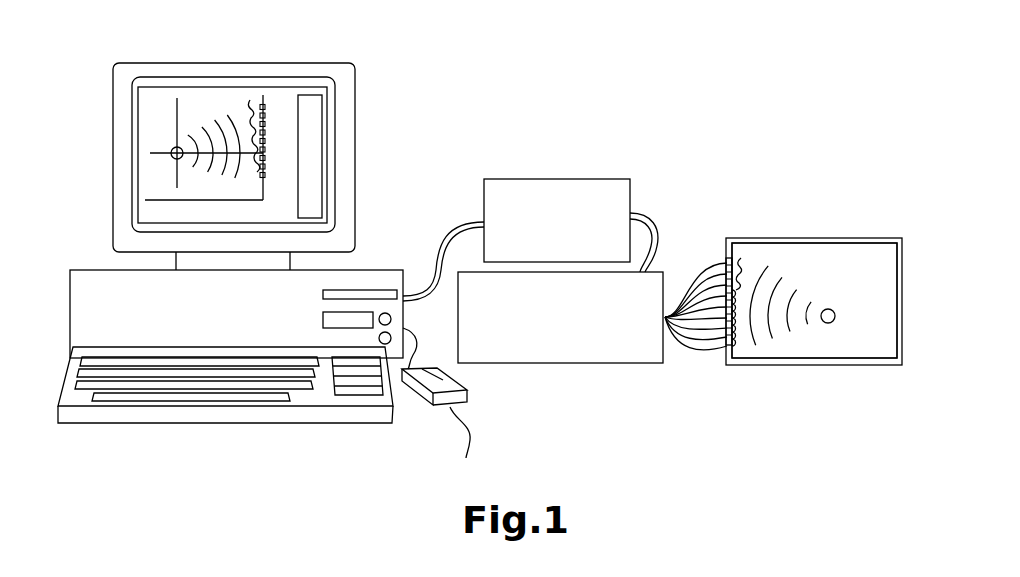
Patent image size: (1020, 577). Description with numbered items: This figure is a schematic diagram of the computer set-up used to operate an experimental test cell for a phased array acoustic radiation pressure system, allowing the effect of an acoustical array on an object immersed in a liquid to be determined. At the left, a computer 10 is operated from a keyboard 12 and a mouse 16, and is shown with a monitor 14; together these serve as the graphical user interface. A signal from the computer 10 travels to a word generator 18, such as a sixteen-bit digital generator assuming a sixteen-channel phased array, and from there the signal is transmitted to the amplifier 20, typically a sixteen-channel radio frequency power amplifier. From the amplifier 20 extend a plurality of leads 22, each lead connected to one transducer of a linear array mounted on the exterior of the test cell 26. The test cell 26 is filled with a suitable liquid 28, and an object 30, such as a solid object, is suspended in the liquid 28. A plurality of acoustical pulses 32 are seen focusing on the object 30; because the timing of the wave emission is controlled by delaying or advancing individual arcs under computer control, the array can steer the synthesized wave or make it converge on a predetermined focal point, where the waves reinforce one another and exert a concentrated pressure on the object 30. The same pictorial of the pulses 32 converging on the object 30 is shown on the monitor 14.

The computer 10 is at (100, 280).
The keyboard 12 is at (235, 425).
The monitor 14 is at (357, 133).
The mouse 16 is at (438, 403).
The word generator 18 is at (572, 177).
The amplifier 20 is at (600, 363).
The leads 22 is at (687, 352).
The test cell 26 is at (903, 317).
The liquid 28 is at (863, 272).
The object 30 is at (828, 309).
The acoustical pulses 32 is at (785, 268).